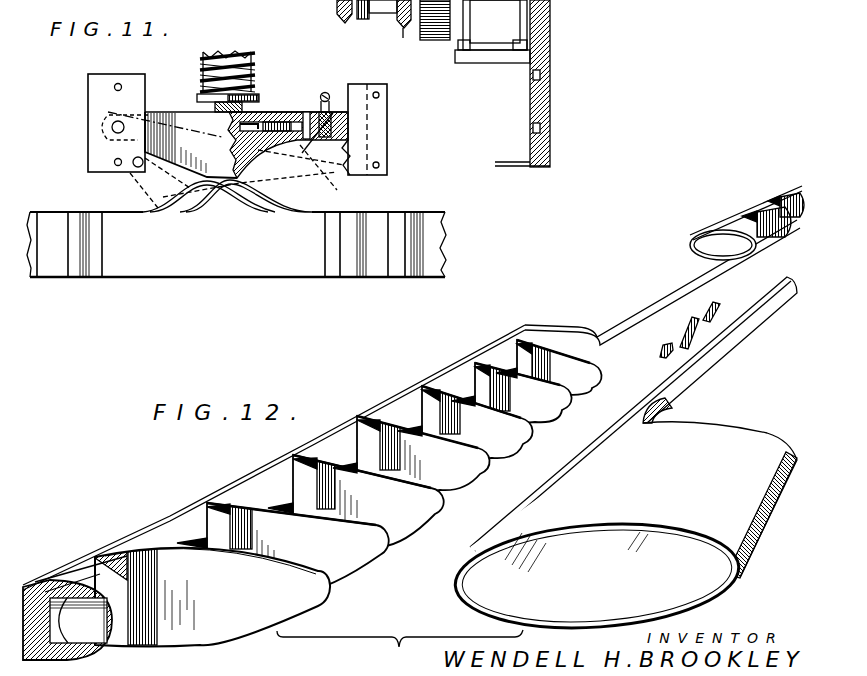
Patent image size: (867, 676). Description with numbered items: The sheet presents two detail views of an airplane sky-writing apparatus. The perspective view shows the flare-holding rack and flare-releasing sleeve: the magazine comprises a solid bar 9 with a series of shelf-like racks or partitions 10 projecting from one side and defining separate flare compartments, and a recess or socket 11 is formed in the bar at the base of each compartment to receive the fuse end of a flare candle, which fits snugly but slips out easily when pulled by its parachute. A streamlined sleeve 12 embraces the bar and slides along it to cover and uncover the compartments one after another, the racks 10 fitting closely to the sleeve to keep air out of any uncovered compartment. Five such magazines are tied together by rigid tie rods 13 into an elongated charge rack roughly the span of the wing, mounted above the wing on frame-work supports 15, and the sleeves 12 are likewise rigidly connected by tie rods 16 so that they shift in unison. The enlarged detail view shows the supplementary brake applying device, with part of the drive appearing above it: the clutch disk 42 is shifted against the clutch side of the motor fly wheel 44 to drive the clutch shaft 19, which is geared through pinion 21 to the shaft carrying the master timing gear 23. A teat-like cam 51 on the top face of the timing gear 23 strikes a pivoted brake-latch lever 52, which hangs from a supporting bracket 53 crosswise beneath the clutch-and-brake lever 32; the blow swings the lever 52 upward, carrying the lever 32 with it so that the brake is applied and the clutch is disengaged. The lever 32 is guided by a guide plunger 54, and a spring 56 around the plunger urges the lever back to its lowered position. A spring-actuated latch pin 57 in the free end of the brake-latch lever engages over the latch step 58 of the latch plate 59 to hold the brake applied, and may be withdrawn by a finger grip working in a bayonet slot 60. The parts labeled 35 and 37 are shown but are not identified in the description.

In FIG. 12, the solid bar 9 is at (172, 513).
In FIG. 12, the shelf-like racks or partitions 10 is at (777, 178).
In FIG. 12, the recess or socket 11 is at (82, 633).
In FIG. 12, the sleeve 12 is at (641, 533).
In FIG. 12, the tie rods 13 is at (668, 306).
In FIG. 12, the frame-work supports 15 is at (666, 357).
In FIG. 12, the tie rods 16 is at (740, 360).
In FIG. 11, the clutch shaft 19 is at (364, 16).
In FIG. 11, the pinion 21 is at (336, 2).
In FIG. 11, the master timing gear 23 is at (46, 203).
In FIG. 11, the clutch-and-brake lever 32 is at (256, 96).
In FIG. 11, the base 35 is at (270, 297).
In FIG. 11, the sheet 37 is at (190, 186).
In FIG. 11, the clutch disk 42 is at (404, 36).
In FIG. 11, the motor fly wheel 44 is at (437, 40).
In FIG. 11, the cam 51 is at (228, 190).
In FIG. 11, the brake-latch lever 52 is at (168, 122).
In FIG. 11, the supporting bracket 53 is at (98, 92).
In FIG. 11, the guide plunger 54 is at (236, 56).
In FIG. 11, the spring 56 is at (244, 65).
In FIG. 11, the latch pin 57 is at (305, 114).
In FIG. 11, the latch step 58 is at (348, 134).
In FIG. 11, the latch plate 59 is at (325, 93).
In FIG. 11, the bayonet slot 60 is at (292, 151).